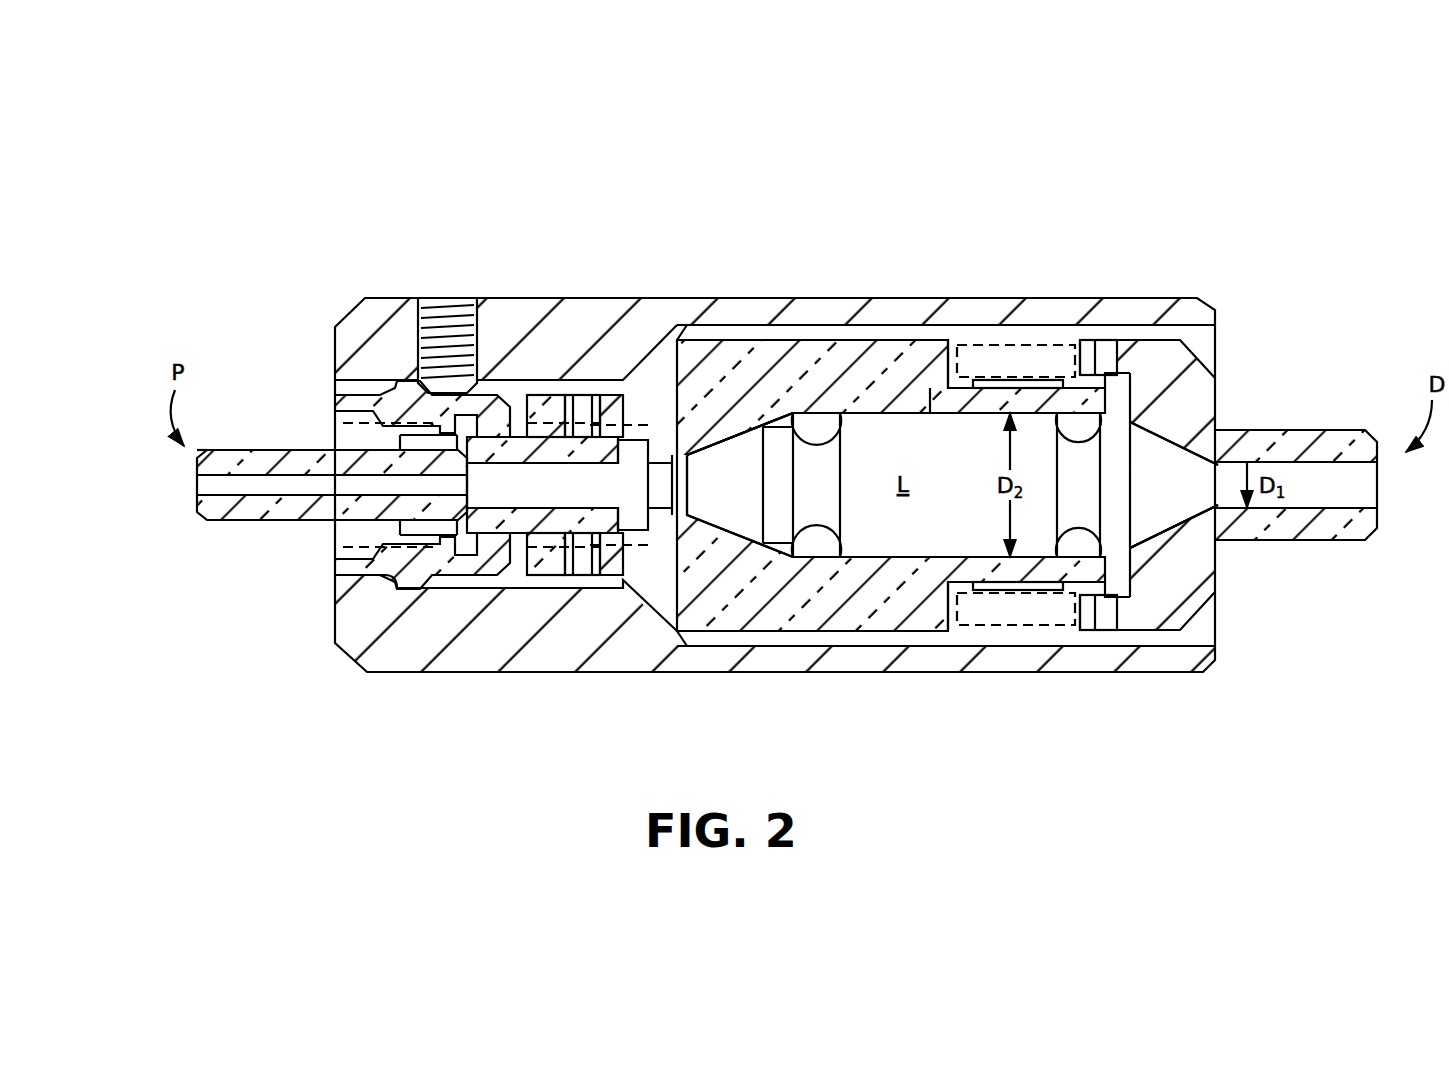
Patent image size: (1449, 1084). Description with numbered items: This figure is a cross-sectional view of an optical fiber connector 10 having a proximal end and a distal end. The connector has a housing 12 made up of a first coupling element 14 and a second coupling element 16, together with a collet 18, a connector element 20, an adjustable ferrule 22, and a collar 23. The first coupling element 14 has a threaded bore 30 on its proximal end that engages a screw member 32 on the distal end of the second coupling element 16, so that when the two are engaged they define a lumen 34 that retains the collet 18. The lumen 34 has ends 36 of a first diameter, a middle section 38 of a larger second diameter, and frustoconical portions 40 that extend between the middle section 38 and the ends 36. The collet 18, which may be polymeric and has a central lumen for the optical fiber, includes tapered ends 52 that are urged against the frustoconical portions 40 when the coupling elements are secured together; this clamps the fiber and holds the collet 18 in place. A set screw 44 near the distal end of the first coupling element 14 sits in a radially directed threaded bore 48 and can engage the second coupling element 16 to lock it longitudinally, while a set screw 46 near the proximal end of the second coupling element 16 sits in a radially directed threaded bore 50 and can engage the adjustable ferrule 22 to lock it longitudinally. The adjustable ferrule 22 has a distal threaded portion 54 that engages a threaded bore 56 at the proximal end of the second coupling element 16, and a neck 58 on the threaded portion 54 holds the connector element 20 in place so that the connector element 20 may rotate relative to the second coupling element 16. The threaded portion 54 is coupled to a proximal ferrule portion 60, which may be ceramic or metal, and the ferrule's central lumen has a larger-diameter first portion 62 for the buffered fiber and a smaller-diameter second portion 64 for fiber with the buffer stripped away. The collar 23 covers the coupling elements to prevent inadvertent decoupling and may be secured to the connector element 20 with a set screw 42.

The optical fiber connector 10 is at (1019, 226).
The housing 12 is at (975, 690).
The first coupling element 14 is at (1206, 382).
The second coupling element 16 is at (756, 362).
The collet 18 is at (912, 438).
The connector element 20 is at (393, 402).
The ferrule 22 is at (233, 458).
The collar 23 is at (1100, 656).
The threaded bore 30 is at (1048, 400).
The screw member 32 is at (1000, 378).
The lumen 34 is at (816, 408).
The ends 36 is at (672, 487).
The middle section 38 is at (900, 566).
The frustoconical portions 40 is at (696, 535).
The set screw 42 is at (430, 352).
The set screw 44 is at (1124, 354).
The set screw 46 is at (522, 446).
The threaded bore 48 is at (1110, 366).
The threaded bore 50 is at (582, 410).
The tapered ends 52 is at (712, 462).
The threaded portion 54 is at (563, 542).
The threaded bore 56 is at (607, 542).
The neck 58 is at (466, 556).
The ferrule portion 60 is at (223, 535).
The first portion 62 is at (512, 472).
The second portion 64 is at (320, 492).